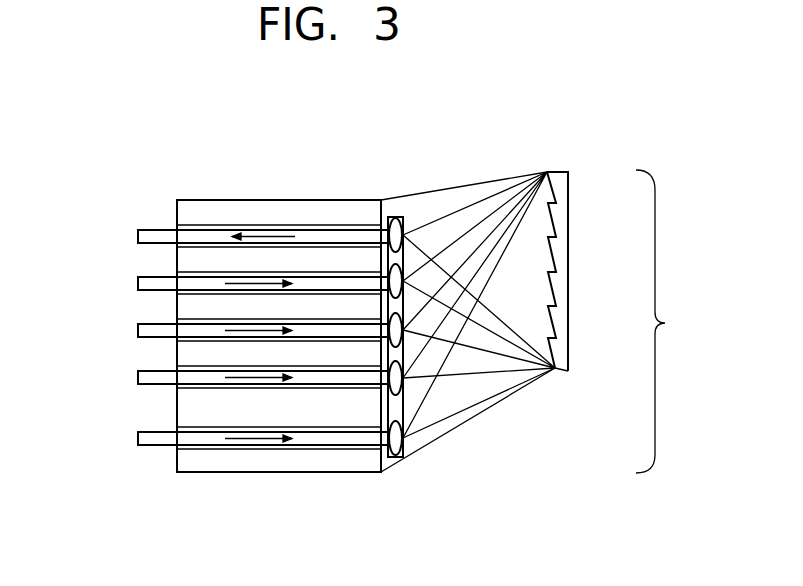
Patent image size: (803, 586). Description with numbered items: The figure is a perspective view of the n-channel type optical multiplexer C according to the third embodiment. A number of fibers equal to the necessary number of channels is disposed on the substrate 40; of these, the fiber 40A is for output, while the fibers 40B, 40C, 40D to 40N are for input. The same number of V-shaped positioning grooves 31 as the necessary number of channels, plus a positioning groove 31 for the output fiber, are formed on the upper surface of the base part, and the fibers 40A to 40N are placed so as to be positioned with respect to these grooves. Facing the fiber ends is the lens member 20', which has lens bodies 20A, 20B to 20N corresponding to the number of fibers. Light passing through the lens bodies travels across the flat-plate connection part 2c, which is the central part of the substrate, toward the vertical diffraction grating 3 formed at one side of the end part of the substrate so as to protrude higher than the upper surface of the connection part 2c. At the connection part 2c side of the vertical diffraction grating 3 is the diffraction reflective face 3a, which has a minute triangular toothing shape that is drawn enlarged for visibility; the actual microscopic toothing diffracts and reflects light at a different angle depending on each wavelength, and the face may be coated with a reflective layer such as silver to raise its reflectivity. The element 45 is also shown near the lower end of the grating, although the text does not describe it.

The vertical diffraction grating 3 is at (560, 287).
The diffraction reflective face 3a is at (550, 222).
The lens member 20' is at (375, 285).
The lens body 20A is at (403, 232).
The lens body 20B is at (403, 278).
The lens body 20N is at (403, 456).
The connection part 2c is at (430, 408).
The V-shaped positioning groove 31 is at (215, 225).
The substrate 40 is at (287, 460).
The output fiber 40A is at (156, 230).
The input fiber 40B is at (156, 277).
The input fiber 40C is at (156, 324).
The input fiber 40D is at (156, 371).
The input fiber 40N is at (156, 432).
The grating bottom surface 45 is at (528, 395).
The n-channel type optical multiplexer C is at (665, 321).